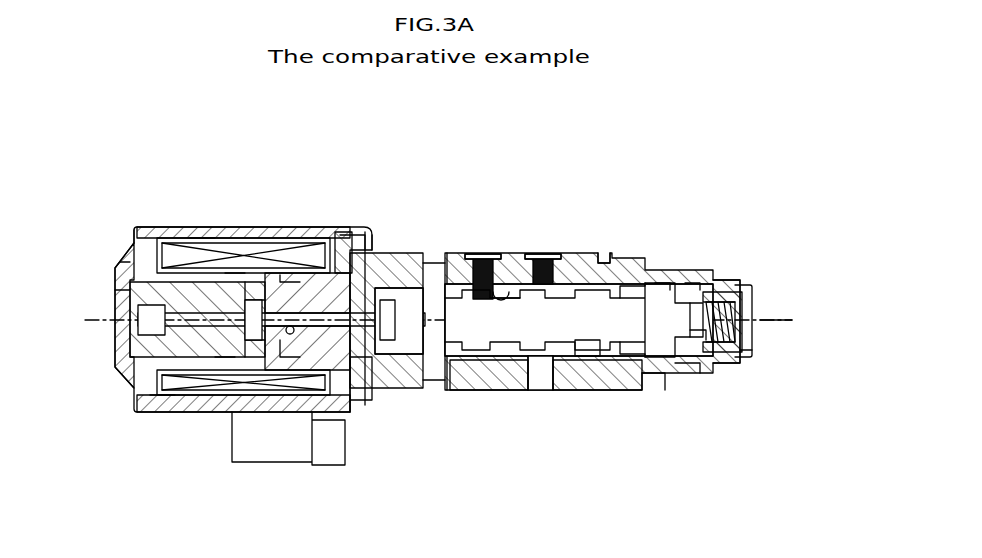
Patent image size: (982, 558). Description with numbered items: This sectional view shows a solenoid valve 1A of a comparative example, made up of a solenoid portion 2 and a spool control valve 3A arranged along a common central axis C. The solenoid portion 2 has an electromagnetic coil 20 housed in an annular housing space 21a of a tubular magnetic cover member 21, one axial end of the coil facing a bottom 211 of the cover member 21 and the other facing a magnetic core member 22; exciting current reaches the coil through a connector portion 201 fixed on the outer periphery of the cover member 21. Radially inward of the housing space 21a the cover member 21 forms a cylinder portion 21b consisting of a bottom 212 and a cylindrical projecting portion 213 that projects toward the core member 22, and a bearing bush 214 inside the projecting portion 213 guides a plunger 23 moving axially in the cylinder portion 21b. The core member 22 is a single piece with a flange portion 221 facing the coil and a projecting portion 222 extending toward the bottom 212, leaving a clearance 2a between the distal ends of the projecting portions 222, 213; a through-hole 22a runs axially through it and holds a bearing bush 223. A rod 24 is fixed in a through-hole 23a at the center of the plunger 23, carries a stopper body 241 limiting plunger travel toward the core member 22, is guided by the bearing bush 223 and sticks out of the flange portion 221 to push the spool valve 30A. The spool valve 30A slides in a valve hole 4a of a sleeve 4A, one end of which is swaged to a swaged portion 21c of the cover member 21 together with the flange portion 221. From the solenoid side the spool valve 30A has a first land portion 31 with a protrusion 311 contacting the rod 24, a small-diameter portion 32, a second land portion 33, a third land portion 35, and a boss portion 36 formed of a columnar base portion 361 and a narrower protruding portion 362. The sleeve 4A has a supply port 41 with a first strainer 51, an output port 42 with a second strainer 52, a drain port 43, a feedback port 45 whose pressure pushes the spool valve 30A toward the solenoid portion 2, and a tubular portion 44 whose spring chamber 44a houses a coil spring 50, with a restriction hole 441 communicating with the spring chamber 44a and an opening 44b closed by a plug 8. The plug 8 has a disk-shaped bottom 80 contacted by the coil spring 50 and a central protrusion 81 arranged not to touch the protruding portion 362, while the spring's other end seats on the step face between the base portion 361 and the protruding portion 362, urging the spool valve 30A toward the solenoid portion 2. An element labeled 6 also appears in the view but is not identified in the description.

The solenoid valve 1A is at (140, 168).
The solenoid portion 2 is at (254, 321).
The clearance 2a is at (233, 272).
The electromagnetic coil 20 is at (243, 252).
The cover member 21 is at (128, 210).
The housing space 21a is at (148, 250).
The cylinder portion 21b is at (126, 286).
The swaged portion 21c is at (380, 233).
The bottom 211 is at (130, 263).
The bottom 212 is at (133, 322).
The projecting portion 213 is at (200, 265).
The bearing bush 214 is at (162, 400).
The core member 22 is at (378, 232).
The through-hole 22a is at (290, 330).
The flange portion 221 is at (348, 247).
The projecting portion 222 is at (287, 278).
The bearing bush 223 is at (285, 345).
The plunger 23 is at (165, 360).
The through-hole 23a is at (162, 315).
The rod 24 is at (253, 342).
The stopper body 241 is at (223, 357).
The connector portion 201 is at (273, 462).
The spool control valve 3A is at (390, 404).
The sleeve 4A is at (585, 305).
The valve hole 4a is at (600, 262).
The supply port 41 is at (547, 258).
The output port 42 is at (487, 258).
The drain port 43 is at (435, 262).
The tubular portion 44 is at (757, 376).
The spring chamber 44a is at (668, 355).
The opening 44b is at (757, 352).
The restriction hole 441 is at (683, 378).
The feedback port 45 is at (608, 260).
The coil spring 50 is at (745, 282).
The first strainer 51 is at (553, 260).
The second strainer 52 is at (493, 260).
The port 6 is at (580, 352).
The plug 8 is at (762, 284).
The bottom 80 is at (752, 338).
The protrusion 81 is at (750, 291).
The spool valve 30A is at (650, 270).
The first land portion 31 is at (420, 340).
The protrusion 311 is at (387, 330).
The small-diameter portion 32 is at (467, 335).
The second land portion 33 is at (543, 350).
The third land portion 35 is at (575, 305).
The boss portion 36 is at (737, 224).
The base portion 361 is at (662, 275).
The protruding portion 362 is at (692, 278).
The central axis C is at (780, 321).